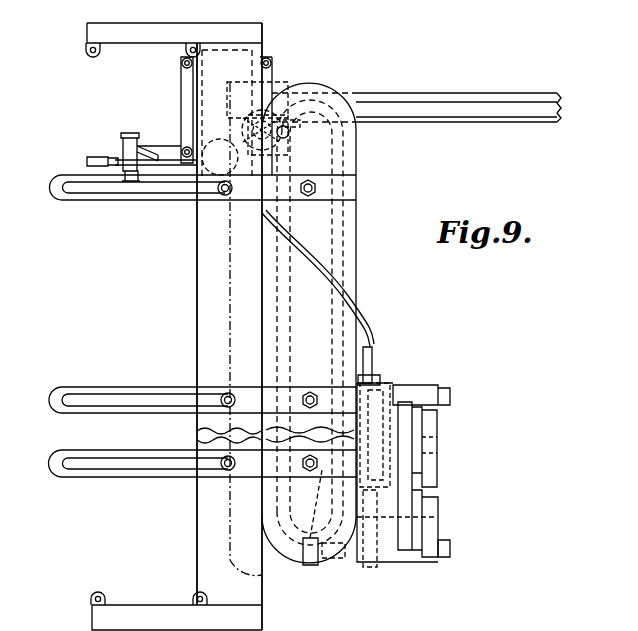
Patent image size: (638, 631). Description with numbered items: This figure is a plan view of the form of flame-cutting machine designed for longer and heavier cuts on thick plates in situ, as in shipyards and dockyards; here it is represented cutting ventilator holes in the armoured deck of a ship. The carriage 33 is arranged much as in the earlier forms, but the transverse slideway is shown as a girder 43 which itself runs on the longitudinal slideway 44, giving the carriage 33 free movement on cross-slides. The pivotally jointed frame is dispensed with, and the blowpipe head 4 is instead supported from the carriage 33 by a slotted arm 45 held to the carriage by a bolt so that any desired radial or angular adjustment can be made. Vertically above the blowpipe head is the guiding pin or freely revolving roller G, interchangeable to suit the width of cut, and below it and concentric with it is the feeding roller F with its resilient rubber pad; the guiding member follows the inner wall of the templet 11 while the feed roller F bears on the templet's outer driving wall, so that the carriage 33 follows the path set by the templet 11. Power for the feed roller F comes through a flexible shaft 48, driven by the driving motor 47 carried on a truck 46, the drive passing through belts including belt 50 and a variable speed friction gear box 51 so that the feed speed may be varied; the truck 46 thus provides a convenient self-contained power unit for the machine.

The blowpipe head 4 is at (188, 190).
The templet 11 is at (331, 245).
The carriage 33 is at (302, 88).
The girder 43 is at (500, 108).
The longitudinal slideway 44 is at (207, 254).
The slotted arm 45 is at (262, 139).
The truck 46 is at (415, 395).
The driving motor 47 is at (307, 548).
The flexible shaft 48 is at (363, 327).
The belt 50 is at (405, 485).
The variable speed friction gear box 51 is at (385, 400).
The feeding roller F is at (300, 127).
The guiding pin or roller G is at (291, 135).